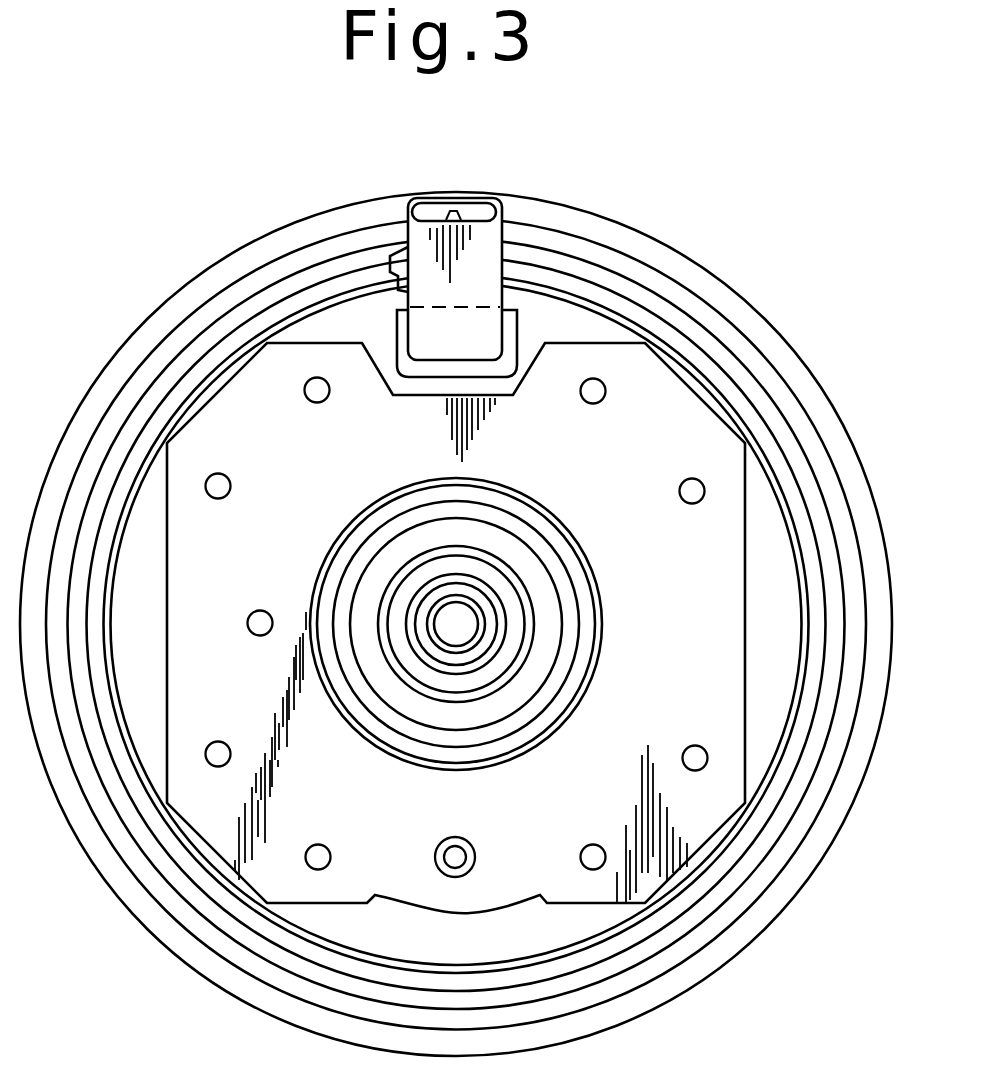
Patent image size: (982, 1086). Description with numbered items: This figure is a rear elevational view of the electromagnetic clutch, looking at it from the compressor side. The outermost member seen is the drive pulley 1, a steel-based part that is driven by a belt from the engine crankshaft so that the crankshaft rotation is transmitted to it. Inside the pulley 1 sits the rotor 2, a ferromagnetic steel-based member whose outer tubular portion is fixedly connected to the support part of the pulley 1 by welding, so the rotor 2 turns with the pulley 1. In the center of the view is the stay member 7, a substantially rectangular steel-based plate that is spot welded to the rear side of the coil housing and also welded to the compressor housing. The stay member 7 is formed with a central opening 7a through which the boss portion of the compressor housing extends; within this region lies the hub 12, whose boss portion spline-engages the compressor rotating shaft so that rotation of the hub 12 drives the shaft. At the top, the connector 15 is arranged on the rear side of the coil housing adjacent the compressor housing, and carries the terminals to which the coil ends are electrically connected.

The drive pulley 1 is at (693, 260).
The rotor 2 is at (593, 292).
The stay member 7 is at (705, 622).
The central opening 7a is at (580, 523).
The hub 12 is at (545, 634).
The connector 15 is at (480, 262).